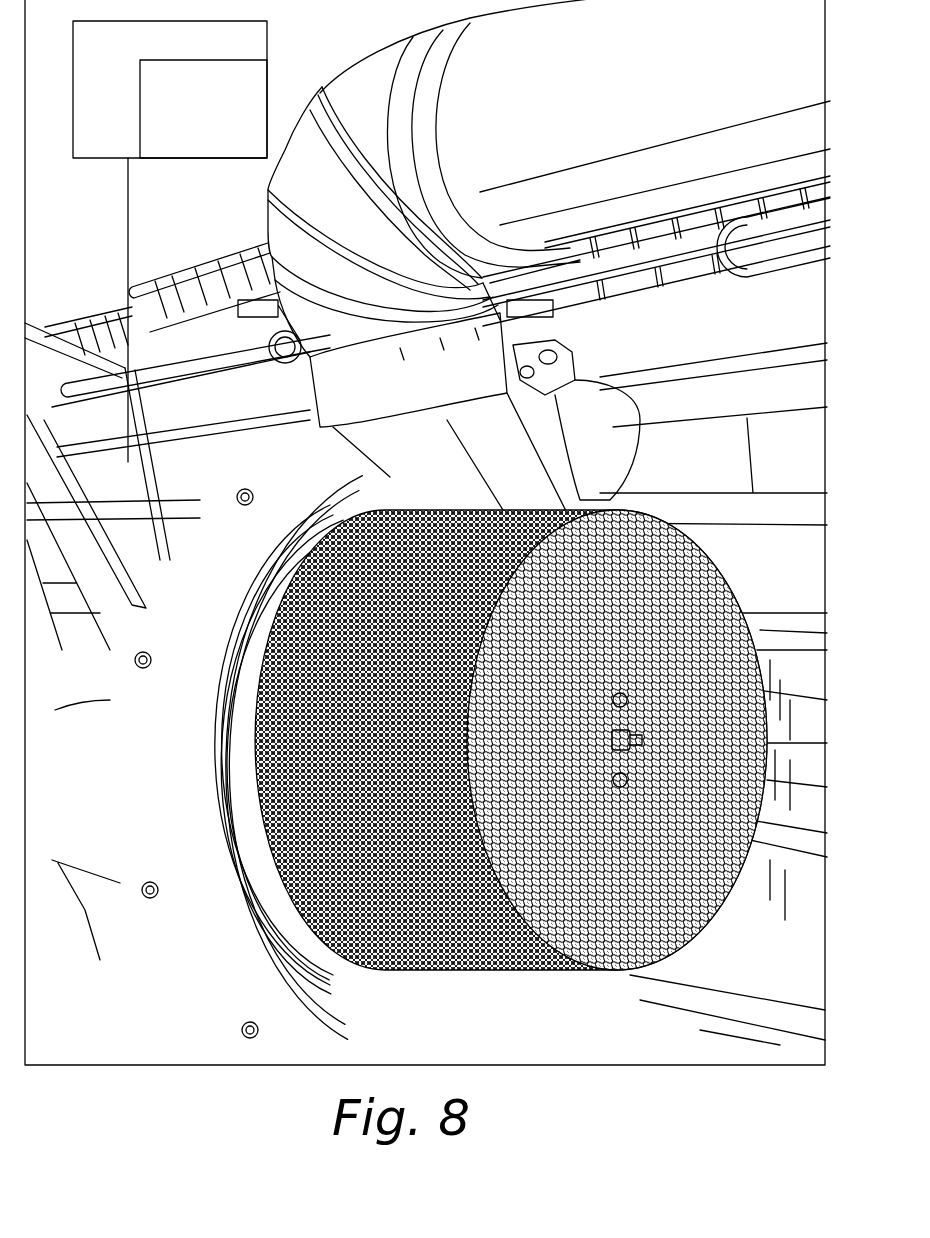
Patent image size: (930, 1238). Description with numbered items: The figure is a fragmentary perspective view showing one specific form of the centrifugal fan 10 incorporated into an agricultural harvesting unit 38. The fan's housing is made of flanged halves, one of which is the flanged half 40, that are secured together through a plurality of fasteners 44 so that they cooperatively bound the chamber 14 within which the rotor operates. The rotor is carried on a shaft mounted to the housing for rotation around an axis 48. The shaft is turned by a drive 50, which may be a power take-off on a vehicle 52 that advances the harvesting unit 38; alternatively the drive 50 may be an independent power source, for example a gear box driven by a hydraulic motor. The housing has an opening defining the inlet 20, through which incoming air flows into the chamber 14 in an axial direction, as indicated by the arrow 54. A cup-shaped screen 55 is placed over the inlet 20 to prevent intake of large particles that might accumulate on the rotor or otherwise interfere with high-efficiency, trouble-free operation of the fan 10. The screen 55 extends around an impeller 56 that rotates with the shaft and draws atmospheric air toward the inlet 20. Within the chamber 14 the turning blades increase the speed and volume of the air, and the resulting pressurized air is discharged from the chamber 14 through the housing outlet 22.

The centrifugal fan 10 is at (399, 565).
The chamber 14 is at (187, 787).
The inlet 20 is at (496, 747).
The housing outlet 22 is at (355, 410).
The harvesting unit 38 is at (795, 535).
The flanged half 40 is at (167, 747).
The fasteners 44 is at (157, 673).
The axis 48 is at (808, 745).
The drive 50 is at (246, 150).
The vehicle 52 is at (121, 103).
The arrow 54 is at (680, 632).
The cup-shaped screen 55 is at (483, 970).
The impeller 56 is at (540, 590).